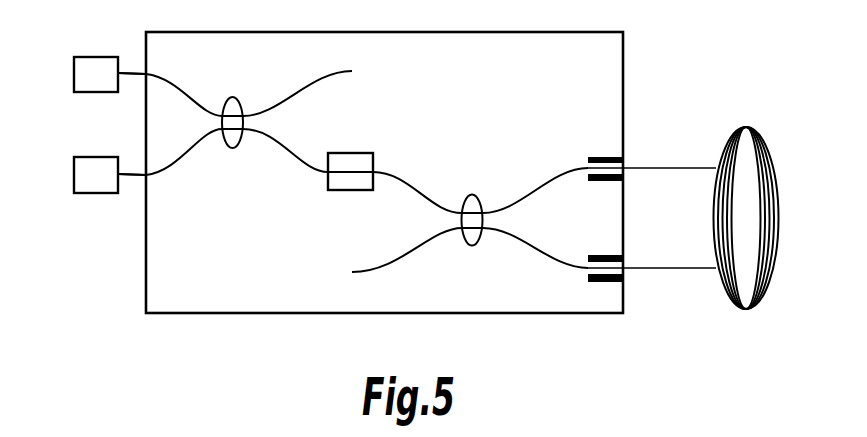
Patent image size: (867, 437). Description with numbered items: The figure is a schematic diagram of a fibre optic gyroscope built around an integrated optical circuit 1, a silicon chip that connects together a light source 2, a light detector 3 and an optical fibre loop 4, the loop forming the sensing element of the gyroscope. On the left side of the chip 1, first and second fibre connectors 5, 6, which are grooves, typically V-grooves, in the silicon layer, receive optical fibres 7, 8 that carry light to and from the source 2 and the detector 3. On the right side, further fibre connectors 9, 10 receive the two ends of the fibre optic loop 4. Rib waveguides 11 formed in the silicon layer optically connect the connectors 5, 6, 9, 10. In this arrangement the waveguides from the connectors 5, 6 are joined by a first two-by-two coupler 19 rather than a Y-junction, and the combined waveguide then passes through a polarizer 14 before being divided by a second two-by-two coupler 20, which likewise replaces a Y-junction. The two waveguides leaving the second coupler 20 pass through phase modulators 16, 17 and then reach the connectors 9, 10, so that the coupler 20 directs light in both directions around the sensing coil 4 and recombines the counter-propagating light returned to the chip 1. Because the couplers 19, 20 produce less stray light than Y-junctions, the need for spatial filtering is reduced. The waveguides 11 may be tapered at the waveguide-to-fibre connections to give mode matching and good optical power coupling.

The integrated optical circuit 1 is at (512, 286).
The light source 2 is at (82, 72).
The light detector 3 is at (82, 174).
The optical fibre loop 4 is at (778, 187).
The first fibre connector 5 is at (148, 74).
The second fibre connector 6 is at (148, 176).
The optical fibre 7 is at (131, 72).
The optical fibre 8 is at (135, 177).
The fibre connector 9 is at (625, 165).
The fibre connector 10 is at (625, 269).
The rib waveguides 11 is at (417, 183).
The polarizer 14 is at (345, 153).
The phase modulator 16 is at (593, 155).
The phase modulator 17 is at (607, 285).
The first 2×2 coupler 19 is at (232, 94).
The second 2×2 coupler 20 is at (472, 250).